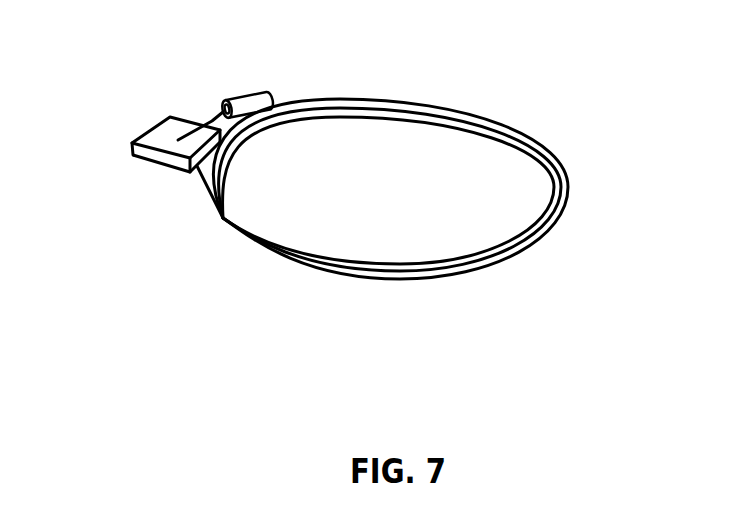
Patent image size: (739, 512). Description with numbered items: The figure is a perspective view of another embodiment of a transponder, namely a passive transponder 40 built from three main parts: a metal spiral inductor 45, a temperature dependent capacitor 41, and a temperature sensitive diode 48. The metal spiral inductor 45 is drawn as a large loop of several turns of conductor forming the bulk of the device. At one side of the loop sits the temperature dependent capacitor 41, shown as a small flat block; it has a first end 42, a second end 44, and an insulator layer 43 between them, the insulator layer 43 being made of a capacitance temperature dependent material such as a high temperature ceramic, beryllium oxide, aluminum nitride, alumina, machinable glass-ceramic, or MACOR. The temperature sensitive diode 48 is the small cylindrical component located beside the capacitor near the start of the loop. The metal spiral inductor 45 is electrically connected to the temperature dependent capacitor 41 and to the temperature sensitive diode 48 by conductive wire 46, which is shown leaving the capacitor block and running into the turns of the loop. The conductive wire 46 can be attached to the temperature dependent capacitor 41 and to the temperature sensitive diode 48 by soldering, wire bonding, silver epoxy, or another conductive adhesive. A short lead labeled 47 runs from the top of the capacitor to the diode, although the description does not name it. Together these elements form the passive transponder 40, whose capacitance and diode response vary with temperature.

The passive transponder 40 is at (574, 141).
The temperature dependent capacitor 41 is at (109, 150).
The first end 42 is at (162, 134).
The insulator layer 43 is at (138, 157).
The second end 44 is at (165, 166).
The metal spiral inductor 45 is at (332, 273).
The conductive wire 46 is at (315, 95).
The wire 47 is at (179, 139).
The temperature sensitive diode 48 is at (252, 100).